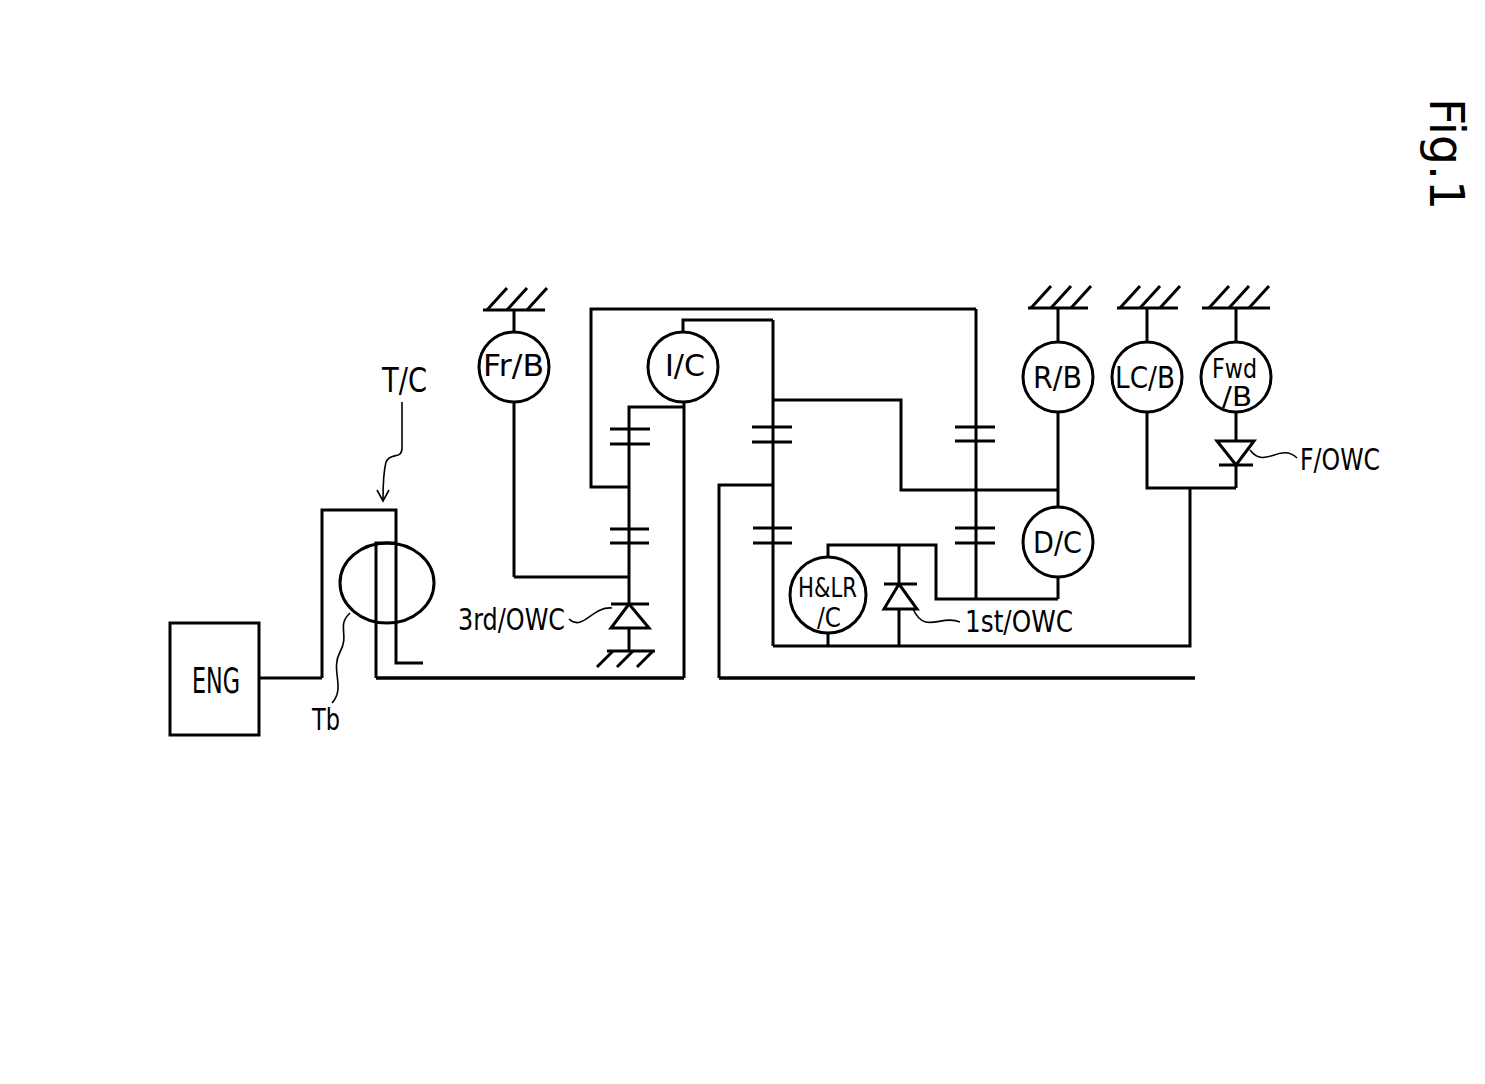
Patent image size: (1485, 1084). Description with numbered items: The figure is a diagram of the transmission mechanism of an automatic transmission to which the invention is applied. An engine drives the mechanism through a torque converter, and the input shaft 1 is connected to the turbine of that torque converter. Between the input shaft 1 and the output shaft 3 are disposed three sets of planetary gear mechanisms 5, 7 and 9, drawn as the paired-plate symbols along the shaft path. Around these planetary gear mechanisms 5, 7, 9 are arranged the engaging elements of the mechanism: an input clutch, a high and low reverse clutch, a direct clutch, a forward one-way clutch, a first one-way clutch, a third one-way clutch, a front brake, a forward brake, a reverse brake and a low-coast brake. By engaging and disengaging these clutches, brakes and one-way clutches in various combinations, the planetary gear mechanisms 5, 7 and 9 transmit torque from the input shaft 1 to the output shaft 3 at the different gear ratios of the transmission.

The input shaft 1 is at (551, 680).
The output shaft 3 is at (1100, 680).
The planetary gear mechanism 5 is at (621, 397).
The planetary gear mechanism 7 is at (790, 378).
The planetary gear mechanism 9 is at (990, 405).